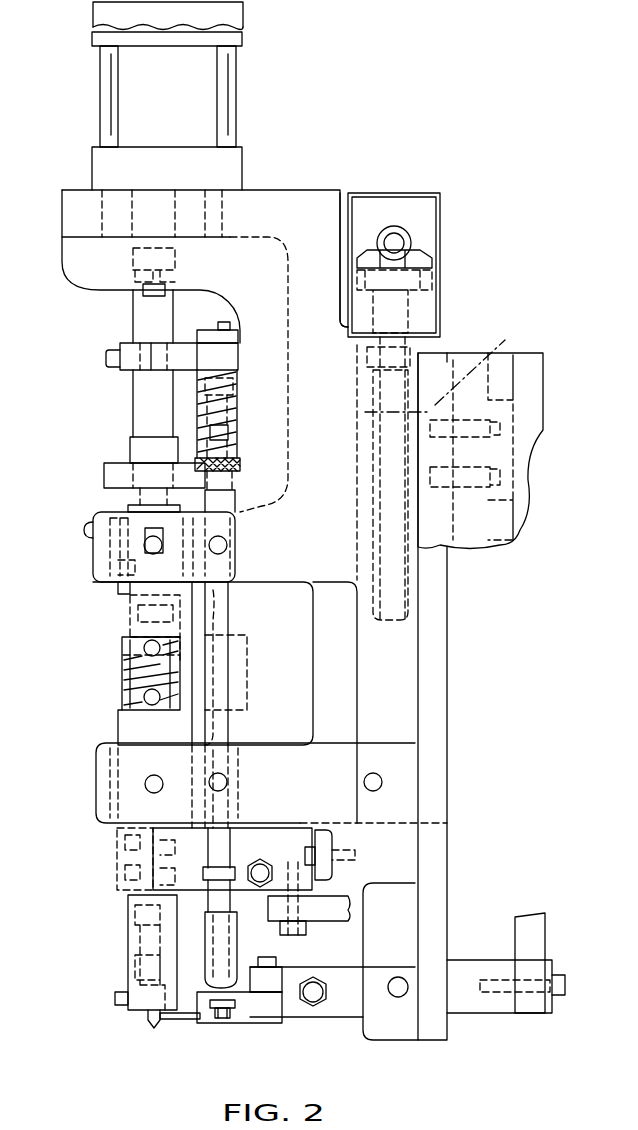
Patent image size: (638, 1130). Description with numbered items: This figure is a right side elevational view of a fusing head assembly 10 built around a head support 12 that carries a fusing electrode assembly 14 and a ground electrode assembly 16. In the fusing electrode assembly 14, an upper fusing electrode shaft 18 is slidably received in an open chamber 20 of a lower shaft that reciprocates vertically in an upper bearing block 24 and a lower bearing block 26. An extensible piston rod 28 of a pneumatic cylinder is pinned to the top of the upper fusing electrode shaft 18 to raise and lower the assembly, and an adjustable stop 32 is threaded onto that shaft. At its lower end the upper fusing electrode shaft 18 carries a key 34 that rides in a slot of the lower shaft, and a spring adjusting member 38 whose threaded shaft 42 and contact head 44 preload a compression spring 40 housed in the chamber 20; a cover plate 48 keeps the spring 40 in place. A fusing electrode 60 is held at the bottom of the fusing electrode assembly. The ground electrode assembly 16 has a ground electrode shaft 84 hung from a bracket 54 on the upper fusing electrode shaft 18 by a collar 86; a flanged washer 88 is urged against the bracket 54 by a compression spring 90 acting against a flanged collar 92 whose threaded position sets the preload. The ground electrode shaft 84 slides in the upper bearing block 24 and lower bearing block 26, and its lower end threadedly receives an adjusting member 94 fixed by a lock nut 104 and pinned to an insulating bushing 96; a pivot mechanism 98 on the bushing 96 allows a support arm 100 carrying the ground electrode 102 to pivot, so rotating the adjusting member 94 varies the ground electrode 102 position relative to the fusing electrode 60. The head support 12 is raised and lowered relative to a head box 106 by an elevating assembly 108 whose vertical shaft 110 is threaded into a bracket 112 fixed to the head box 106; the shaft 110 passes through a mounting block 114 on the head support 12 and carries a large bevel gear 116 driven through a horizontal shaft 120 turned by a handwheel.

The fusing head assembly 10 is at (443, 113).
The head support 12 is at (258, 198).
The fusing electrode assembly 14 is at (118, 446).
The ground electrode assembly 16 is at (268, 409).
The upper fusing electrode shaft 18 is at (135, 323).
The open chamber 20 is at (128, 615).
The upper bearing block 24 is at (95, 556).
The lower bearing block 26 is at (100, 778).
The extensible piston rod 28 is at (150, 212).
The stop 32 is at (112, 478).
The key 34 is at (124, 560).
The spring adjusting member 38 is at (122, 633).
The compression spring 40 is at (178, 666).
The shaft 42 is at (203, 645).
The contact head 44 is at (200, 617).
The cover plate 48 is at (122, 680).
The bracket 54 is at (182, 352).
The fusing electrode 60 is at (150, 1022).
The ground electrode shaft 84 is at (225, 733).
The collar 86 is at (232, 340).
The flanged washer 88 is at (240, 372).
The compression spring 90 is at (244, 430).
The flanged collar 92 is at (243, 465).
The adjusting member 94 is at (250, 909).
The insulating bushing 96 is at (237, 960).
The pivot mechanism 98 is at (224, 1025).
The support arm 100 is at (240, 998).
The ground electrode 102 is at (184, 1020).
The lock nut 104 is at (238, 873).
The head box 106 is at (535, 382).
The elevating assembly 108 is at (442, 258).
The shaft 110 is at (430, 596).
The bracket 112 is at (453, 403).
The mounting block 114 is at (430, 326).
The large bevel gear 116 is at (362, 246).
The shaft 120 is at (412, 236).